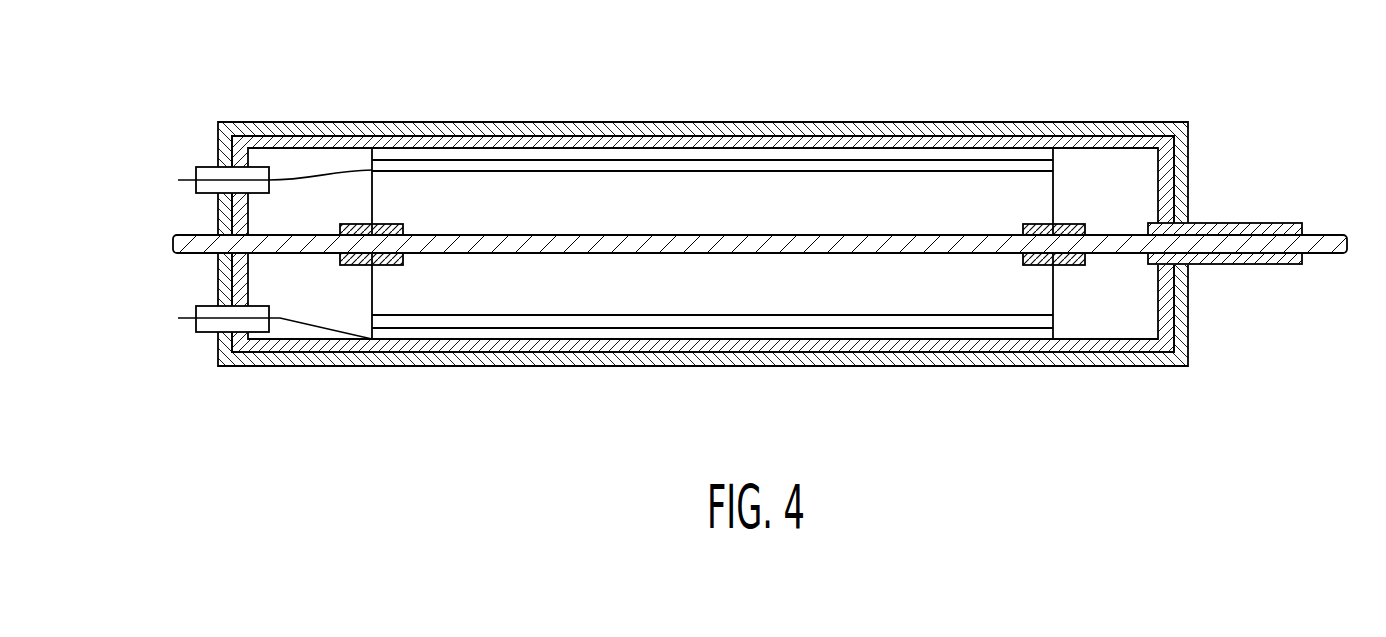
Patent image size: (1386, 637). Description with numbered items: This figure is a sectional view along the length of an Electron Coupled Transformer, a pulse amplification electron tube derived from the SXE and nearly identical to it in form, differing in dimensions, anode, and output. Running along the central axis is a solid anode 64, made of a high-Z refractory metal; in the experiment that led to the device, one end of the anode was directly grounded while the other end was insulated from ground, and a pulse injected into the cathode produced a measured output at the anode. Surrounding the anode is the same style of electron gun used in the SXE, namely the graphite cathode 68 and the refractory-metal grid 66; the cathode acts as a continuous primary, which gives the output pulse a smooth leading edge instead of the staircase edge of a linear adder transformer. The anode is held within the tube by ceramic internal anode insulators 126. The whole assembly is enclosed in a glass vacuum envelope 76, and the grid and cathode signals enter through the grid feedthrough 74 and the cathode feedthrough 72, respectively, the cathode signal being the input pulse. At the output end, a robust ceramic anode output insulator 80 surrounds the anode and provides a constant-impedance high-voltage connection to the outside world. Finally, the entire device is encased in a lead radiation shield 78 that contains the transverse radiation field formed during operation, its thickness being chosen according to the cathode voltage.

The anode 64 is at (186, 240).
The grid 66 is at (436, 170).
The cathode 68 is at (416, 331).
The cathode feedthrough 72 is at (187, 325).
The grid feedthrough 74 is at (185, 168).
The glass vacuum envelope 76 is at (275, 143).
The radiation shield 78 is at (290, 367).
The anode output insulator 80 is at (1245, 224).
The internal anode insulator 126 is at (350, 224).